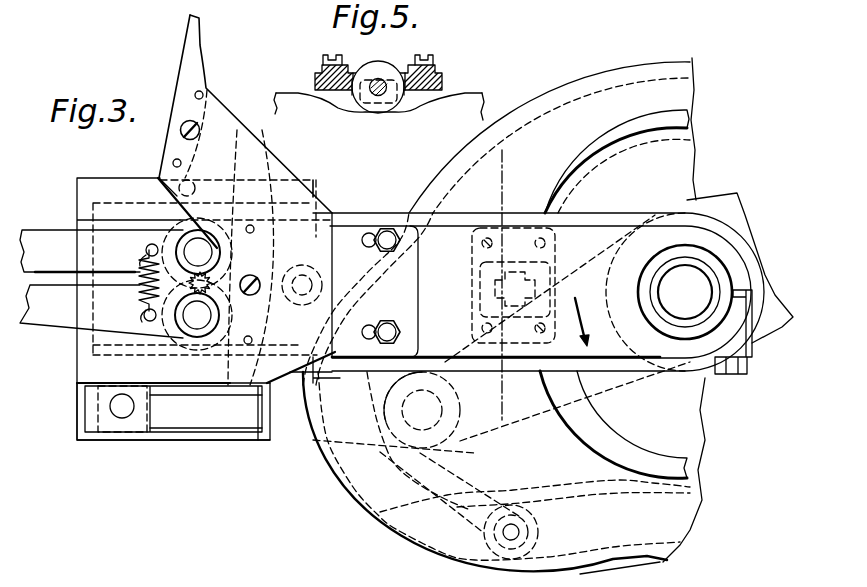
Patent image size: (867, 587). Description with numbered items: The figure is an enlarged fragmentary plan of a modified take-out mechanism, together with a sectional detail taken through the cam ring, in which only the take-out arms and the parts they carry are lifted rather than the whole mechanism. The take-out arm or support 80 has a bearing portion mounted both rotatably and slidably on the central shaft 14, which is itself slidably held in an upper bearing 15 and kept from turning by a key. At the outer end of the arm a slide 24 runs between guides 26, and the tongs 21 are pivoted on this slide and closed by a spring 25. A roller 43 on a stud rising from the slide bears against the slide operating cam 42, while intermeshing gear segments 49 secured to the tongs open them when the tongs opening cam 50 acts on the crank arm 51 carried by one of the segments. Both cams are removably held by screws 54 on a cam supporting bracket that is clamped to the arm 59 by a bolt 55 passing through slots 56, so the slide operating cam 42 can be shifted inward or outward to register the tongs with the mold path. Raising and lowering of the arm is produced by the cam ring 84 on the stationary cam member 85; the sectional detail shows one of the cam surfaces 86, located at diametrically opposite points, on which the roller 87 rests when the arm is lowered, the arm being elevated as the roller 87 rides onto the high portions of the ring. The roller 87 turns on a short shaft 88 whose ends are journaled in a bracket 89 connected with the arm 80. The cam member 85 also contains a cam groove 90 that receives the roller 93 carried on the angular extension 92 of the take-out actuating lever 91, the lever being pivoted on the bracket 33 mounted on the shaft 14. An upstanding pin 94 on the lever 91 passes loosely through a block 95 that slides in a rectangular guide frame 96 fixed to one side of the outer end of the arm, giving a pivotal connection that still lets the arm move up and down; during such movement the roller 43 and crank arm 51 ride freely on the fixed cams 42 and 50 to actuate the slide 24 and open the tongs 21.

In FIG. 3, the shaft 14 is at (670, 295).
In FIG. 3, the upper bearing 15 is at (620, 574).
In FIG. 3, the tongs 21 is at (32, 230).
In FIG. 3, the slide 24 is at (330, 262).
In FIG. 3, the spring 25 is at (140, 300).
In FIG. 3, the guides 26 is at (95, 168).
In FIG. 3, the bracket 33 is at (620, 393).
In FIG. 3, the slide operating cam 42 is at (262, 178).
In FIG. 3, the roller 43 is at (302, 267).
In FIG. 3, the gear segments 49 is at (217, 278).
In FIG. 3, the tongs opening cam 50 is at (210, 118).
In FIG. 3, the crank arm 51 is at (192, 180).
In FIG. 3, the screws 54 is at (180, 130).
In FIG. 3, the bolt 55 is at (383, 230).
In FIG. 3, the slots 56 is at (420, 213).
In FIG. 3, the arm 59 is at (615, 218).
In FIG. 3, the take-out arm 80 is at (600, 214).
In FIG. 5, the take-out arm 80 is at (315, 73).
In FIG. 3, the cam ring 84 is at (640, 448).
In FIG. 5, the cam ring 84 is at (462, 93).
In FIG. 3, the cam member 85 is at (357, 507).
In FIG. 5, the cam surfaces 86 is at (396, 112).
In FIG. 5, the roller 87 is at (384, 62).
In FIG. 5, the short shaft 88 is at (375, 95).
In FIG. 5, the bracket 89 is at (435, 65).
In FIG. 3, the cam groove 90 is at (652, 88).
In FIG. 3, the take-out actuating lever 91 is at (298, 430).
In FIG. 3, the angular extension 92 is at (503, 478).
In FIG. 3, the roller 93 is at (538, 536).
In FIG. 3, the pin 94 is at (120, 410).
In FIG. 3, the block 95 is at (137, 424).
In FIG. 3, the guide frame 96 is at (72, 413).